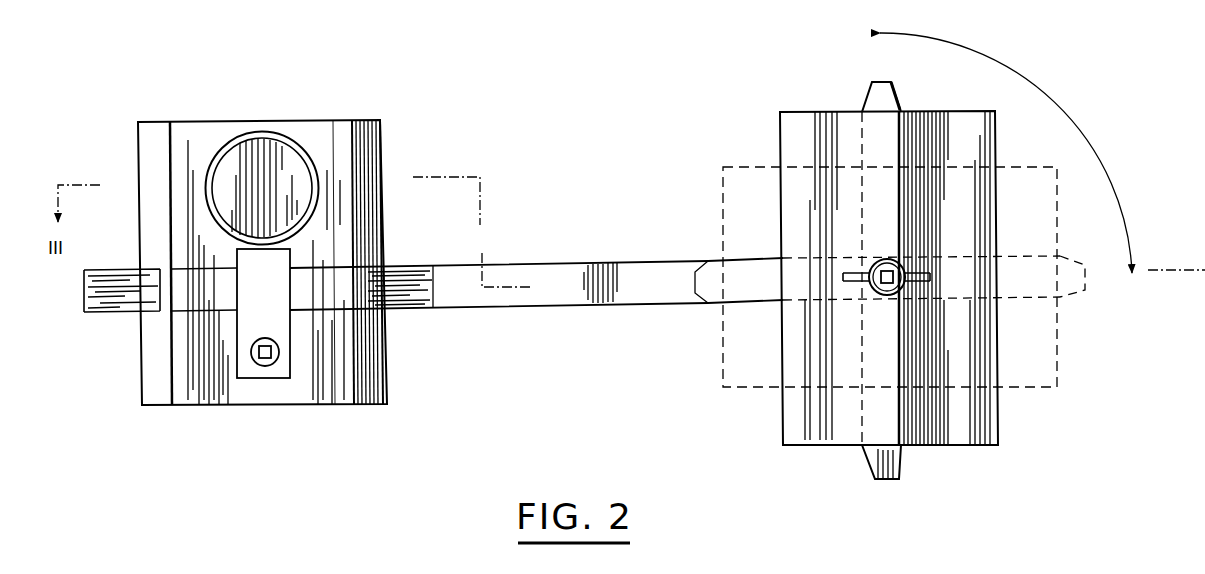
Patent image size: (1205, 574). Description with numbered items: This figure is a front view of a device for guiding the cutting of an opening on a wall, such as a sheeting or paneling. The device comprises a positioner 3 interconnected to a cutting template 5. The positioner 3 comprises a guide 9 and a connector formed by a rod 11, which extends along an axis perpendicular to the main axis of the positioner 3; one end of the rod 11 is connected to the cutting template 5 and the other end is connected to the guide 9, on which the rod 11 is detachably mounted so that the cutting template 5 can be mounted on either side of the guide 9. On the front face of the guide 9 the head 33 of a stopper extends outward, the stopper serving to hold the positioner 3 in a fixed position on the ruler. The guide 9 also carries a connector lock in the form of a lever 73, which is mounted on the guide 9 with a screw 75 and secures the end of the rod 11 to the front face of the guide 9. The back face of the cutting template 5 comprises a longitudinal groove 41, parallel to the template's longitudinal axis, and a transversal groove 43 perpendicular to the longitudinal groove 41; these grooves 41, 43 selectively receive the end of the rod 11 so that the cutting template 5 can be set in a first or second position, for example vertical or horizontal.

The positioner 3 is at (253, 104).
The head 33 is at (292, 136).
The guide 9 is at (383, 147).
The rod 11 is at (565, 311).
The lever 73 is at (278, 320).
The screw 75 is at (258, 366).
The cutting template 5 is at (805, 97).
The transversal groove 43 is at (883, 152).
The longitudinal groove 41 is at (948, 280).